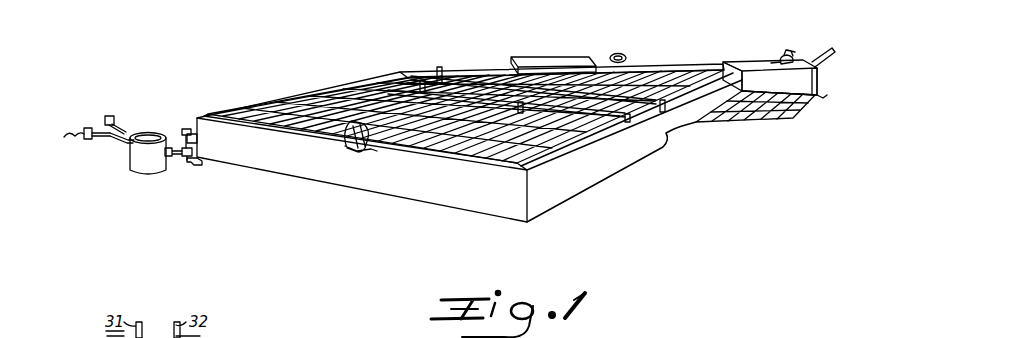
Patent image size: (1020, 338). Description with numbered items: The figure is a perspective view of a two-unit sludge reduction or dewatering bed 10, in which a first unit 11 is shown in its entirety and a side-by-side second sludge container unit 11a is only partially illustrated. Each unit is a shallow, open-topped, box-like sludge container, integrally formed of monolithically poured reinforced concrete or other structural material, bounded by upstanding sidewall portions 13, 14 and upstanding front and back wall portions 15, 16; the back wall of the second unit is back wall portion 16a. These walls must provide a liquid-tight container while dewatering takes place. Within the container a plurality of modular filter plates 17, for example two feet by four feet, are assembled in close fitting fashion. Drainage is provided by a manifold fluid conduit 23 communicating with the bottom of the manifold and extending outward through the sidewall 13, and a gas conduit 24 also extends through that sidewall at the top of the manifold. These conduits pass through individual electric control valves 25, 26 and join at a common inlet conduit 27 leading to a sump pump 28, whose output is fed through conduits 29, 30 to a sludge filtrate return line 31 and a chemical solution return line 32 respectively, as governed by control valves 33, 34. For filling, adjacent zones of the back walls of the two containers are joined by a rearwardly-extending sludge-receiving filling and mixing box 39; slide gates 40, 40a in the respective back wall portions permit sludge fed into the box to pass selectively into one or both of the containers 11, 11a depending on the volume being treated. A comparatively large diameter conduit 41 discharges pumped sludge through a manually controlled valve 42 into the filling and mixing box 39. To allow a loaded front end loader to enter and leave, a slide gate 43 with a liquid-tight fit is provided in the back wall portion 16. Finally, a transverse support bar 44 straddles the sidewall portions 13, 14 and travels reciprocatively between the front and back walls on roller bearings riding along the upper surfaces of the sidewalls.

The sludge reduction bed 10 is at (660, 13).
The first unit 11 is at (347, 183).
The second sludge container unit 11a is at (822, 97).
The sidewall portion 13 is at (351, 90).
The sidewall portion 14 is at (602, 162).
The front wall portion 15 is at (403, 200).
The back wall portion 16 is at (691, 69).
The back wall portion 16a is at (826, 82).
The modular filter plates 17 is at (380, 100).
The manifold fluid conduit 23 is at (202, 166).
The gas conduit 24 is at (198, 140).
The electric control valve 25 is at (186, 160).
The electric control valve 26 is at (184, 130).
The common inlet conduit 27 is at (167, 160).
The sump pump 28 is at (140, 174).
The conduit 29 is at (118, 147).
The conduit 30 is at (102, 143).
The sludge filtrate return line 31 is at (66, 132).
The chemical solution return line 32 is at (104, 115).
The control valve 33 is at (83, 138).
The control valve 34 is at (114, 119).
The filling and mixing box 39 is at (755, 62).
The slide gate 40 is at (721, 68).
The slide gate 40a is at (822, 70).
The conduit 41 is at (822, 52).
The manually controlled valve 42 is at (788, 52).
The slide gate 43 is at (578, 42).
The transverse support bar 44 is at (440, 68).